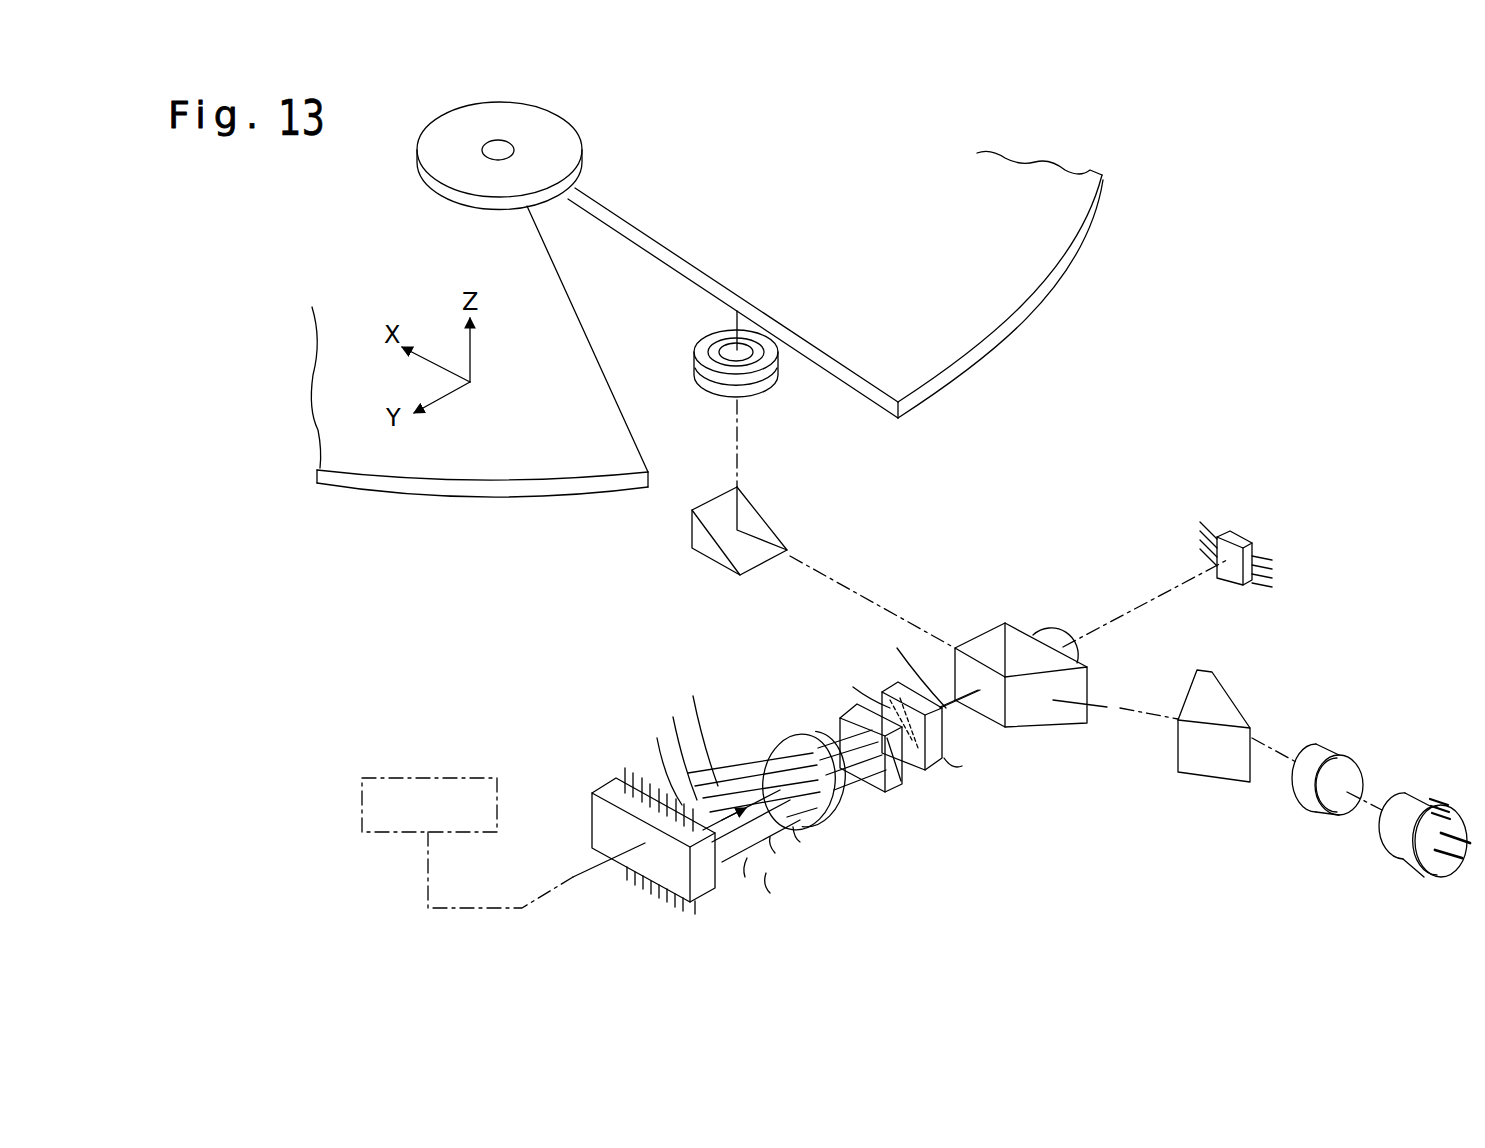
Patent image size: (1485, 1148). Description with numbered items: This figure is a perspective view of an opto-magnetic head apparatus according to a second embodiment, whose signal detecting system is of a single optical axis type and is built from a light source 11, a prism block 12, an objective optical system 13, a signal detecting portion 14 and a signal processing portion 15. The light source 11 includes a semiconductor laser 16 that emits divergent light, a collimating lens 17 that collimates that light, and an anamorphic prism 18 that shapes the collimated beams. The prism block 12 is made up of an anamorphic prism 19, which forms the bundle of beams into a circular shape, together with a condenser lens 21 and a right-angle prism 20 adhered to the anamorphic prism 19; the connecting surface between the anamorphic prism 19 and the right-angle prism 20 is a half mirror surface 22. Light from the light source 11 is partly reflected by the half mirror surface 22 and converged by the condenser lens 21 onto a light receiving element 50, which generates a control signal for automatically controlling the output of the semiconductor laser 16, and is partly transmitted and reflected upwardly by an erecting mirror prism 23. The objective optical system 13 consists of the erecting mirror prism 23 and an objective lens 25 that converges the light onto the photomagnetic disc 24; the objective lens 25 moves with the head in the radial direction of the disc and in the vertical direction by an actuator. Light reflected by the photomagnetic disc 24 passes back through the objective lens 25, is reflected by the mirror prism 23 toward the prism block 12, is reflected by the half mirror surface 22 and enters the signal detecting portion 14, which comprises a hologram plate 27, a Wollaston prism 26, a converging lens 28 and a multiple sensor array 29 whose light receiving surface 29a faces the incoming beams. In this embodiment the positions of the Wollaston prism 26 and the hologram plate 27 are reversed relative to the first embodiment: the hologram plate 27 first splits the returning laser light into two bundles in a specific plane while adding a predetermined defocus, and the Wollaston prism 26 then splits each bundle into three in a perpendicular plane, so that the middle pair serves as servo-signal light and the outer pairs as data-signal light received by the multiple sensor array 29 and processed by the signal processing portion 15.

The light source 11 is at (1324, 757).
The prism block 12 is at (1079, 626).
The objective optical system 13 is at (814, 519).
The signal detecting portion 14 is at (783, 770).
The signal processing portion 15 is at (413, 777).
The semiconductor laser 16 is at (1437, 797).
The collimating lens 17 is at (1332, 746).
The anamorphic prism 18 is at (1213, 693).
The anamorphic prism 19 is at (1075, 661).
The right-angle prism 20 is at (966, 642).
The condenser lens 21 is at (1035, 634).
The half mirror surface 22 is at (1000, 643).
The erecting mirror prism 23 is at (697, 546).
The photomagnetic disc 24 is at (1028, 298).
The objective lens 25 is at (695, 380).
The Wollaston prism 26 is at (842, 723).
The hologram plate 27 is at (888, 693).
The converging lens 28 is at (782, 737).
The multiple sensor array 29 is at (625, 800).
The light receiving surface 29a is at (598, 817).
The light receiving element 50 is at (1247, 537).